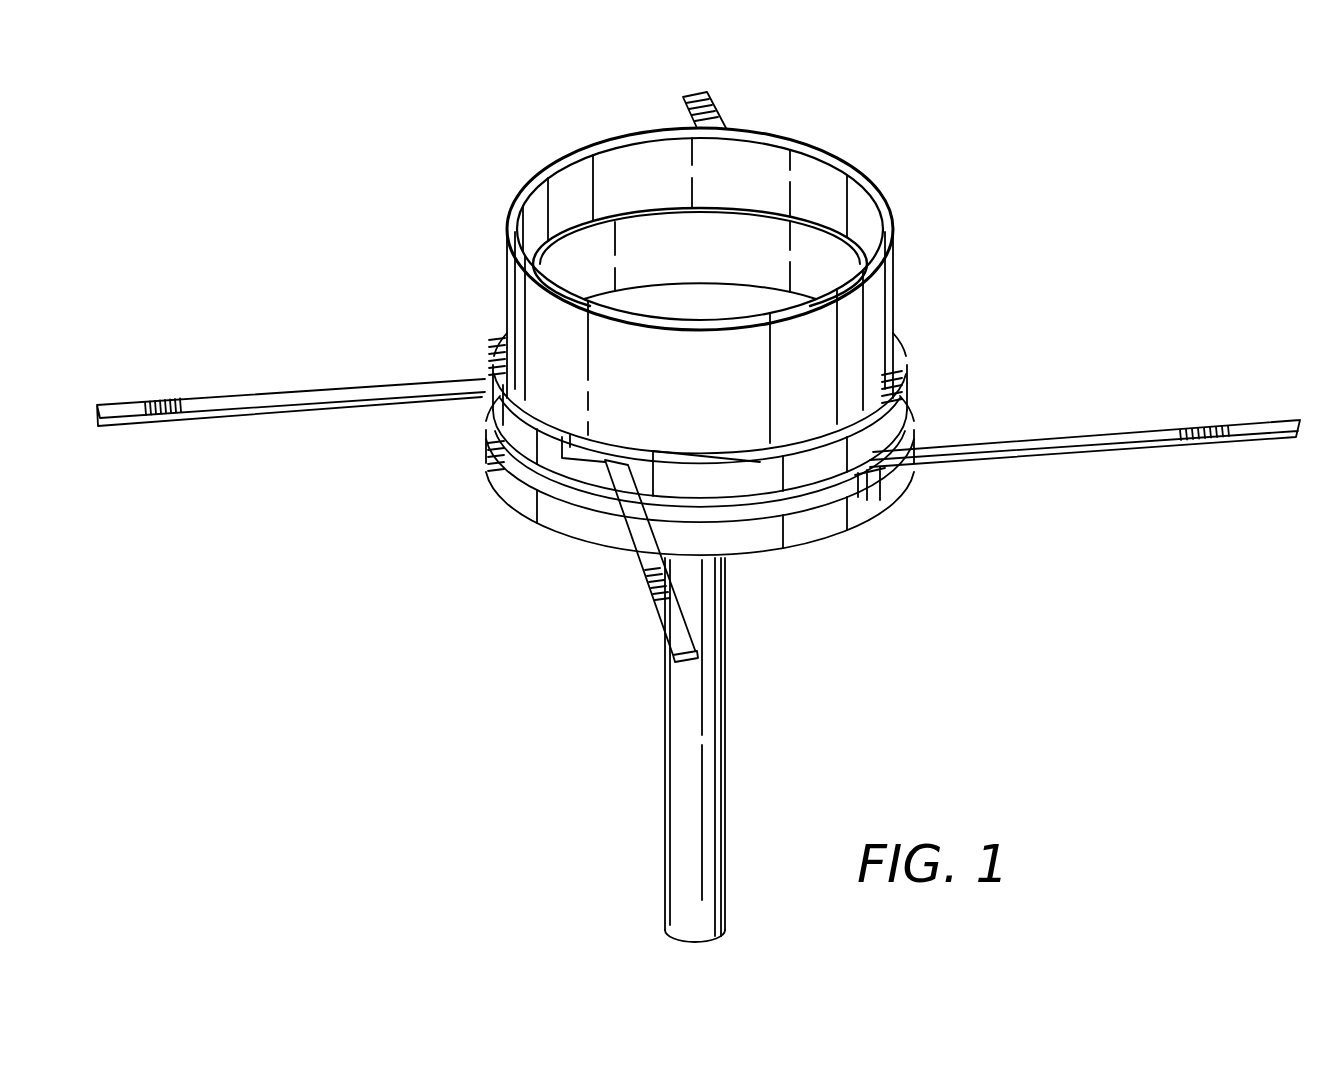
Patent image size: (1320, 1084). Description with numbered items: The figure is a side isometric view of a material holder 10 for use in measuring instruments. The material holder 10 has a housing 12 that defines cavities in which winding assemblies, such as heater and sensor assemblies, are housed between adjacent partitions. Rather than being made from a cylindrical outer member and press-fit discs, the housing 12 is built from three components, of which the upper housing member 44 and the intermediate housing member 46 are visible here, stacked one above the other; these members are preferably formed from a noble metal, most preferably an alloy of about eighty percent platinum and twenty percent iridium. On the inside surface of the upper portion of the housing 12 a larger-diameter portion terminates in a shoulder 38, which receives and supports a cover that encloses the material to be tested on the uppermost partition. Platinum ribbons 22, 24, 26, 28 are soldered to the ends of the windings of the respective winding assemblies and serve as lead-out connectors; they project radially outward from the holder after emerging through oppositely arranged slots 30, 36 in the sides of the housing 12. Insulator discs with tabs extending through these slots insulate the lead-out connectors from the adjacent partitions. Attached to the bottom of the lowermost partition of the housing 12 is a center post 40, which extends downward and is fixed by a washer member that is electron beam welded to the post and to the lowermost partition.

The material holder 10 is at (905, 191).
The housing 12 is at (902, 358).
The platinum ribbon 22 is at (647, 590).
The platinum ribbon 24 is at (713, 118).
The platinum ribbon 26 is at (355, 396).
The platinum ribbon 28 is at (1136, 440).
The slot 30 is at (595, 468).
The slot 36 is at (867, 488).
The shoulder 38 is at (620, 210).
The center post 40 is at (710, 783).
The upper housing member 44 is at (870, 307).
The intermediate housing member 46 is at (910, 403).